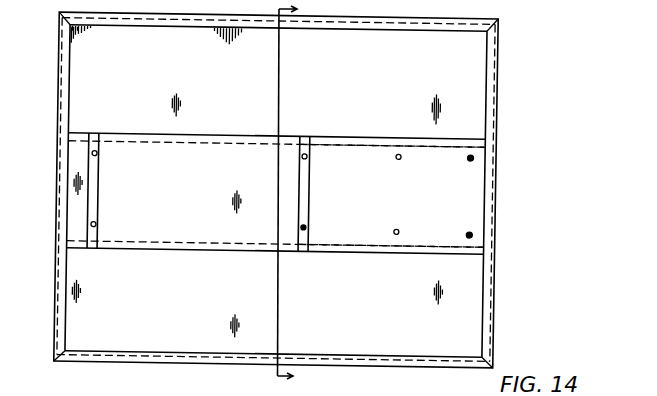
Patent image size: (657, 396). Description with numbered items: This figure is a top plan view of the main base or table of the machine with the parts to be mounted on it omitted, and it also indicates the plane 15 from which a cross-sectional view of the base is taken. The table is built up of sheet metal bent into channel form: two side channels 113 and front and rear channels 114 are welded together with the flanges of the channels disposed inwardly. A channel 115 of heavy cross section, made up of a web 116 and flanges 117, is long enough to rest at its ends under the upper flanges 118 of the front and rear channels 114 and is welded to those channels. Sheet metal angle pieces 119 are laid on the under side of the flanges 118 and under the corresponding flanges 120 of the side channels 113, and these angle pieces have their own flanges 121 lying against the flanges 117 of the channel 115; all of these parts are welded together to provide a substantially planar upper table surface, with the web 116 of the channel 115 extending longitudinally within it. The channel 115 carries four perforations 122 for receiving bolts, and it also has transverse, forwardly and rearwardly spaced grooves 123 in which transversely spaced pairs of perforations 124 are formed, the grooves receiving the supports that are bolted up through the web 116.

The section plane 15— 15 is at (294, 196).
The side channels 113 is at (171, 28).
The front and rear channels 114 is at (57, 326).
The channel 115 is at (183, 254).
The web 116 is at (298, 201).
The flanges 117 is at (347, 147).
The upper flanges 118 is at (70, 315).
The sheet metal angle pieces 119 is at (257, 183).
The flanges 120 is at (376, 27).
The flanges 121 is at (380, 135).
The perforations 122 is at (398, 158).
The grooves 123 is at (214, 192).
The perforations 124 is at (96, 157).